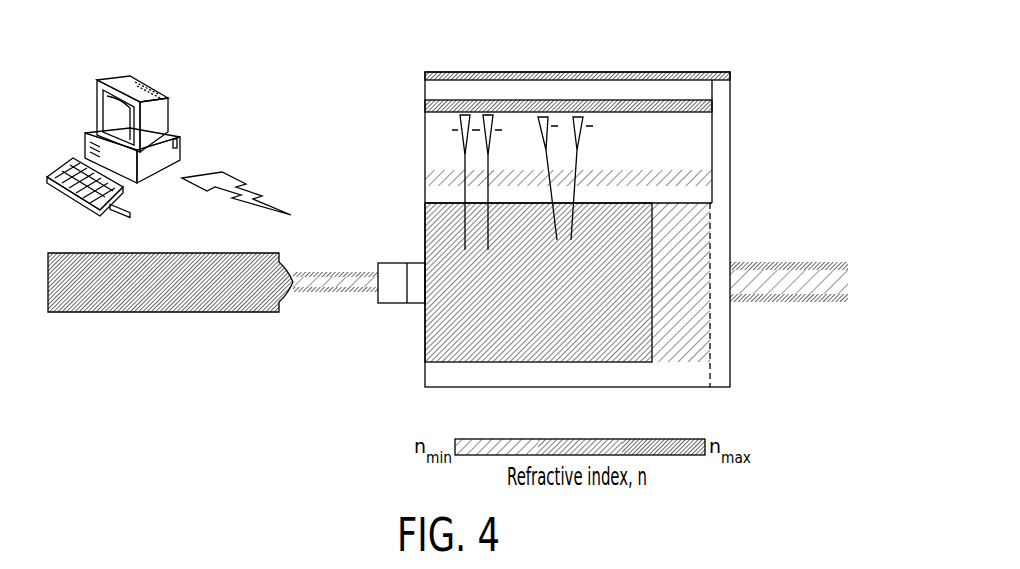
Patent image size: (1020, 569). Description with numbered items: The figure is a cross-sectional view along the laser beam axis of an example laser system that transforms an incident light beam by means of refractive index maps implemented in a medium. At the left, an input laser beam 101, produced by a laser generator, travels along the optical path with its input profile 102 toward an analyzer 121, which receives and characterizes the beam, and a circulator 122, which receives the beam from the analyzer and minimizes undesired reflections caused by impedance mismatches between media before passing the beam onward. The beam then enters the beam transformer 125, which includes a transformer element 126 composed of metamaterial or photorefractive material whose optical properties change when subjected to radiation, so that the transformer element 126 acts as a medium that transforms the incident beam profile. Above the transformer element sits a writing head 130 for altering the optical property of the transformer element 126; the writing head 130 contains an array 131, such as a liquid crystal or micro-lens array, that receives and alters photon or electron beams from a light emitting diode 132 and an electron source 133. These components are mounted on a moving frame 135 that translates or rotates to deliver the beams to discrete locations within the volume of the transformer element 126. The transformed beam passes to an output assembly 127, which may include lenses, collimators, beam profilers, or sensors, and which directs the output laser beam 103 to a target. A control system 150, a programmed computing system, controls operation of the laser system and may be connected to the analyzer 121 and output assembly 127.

The input laser beam 101 is at (100, 300).
The input profile 102 is at (340, 286).
The output laser beam 103 is at (795, 280).
The analyzer 121 is at (384, 272).
The circulator 122 is at (415, 272).
The beam transformer 125 is at (425, 375).
The transformer element 126 is at (447, 326).
The output assembly 127 is at (683, 328).
The writing head 130 is at (705, 127).
The array 131 is at (652, 180).
The light emitting diode 132 is at (483, 138).
The electron source 133 is at (566, 124).
The frame 135 is at (621, 100).
The control system 150 is at (97, 116).